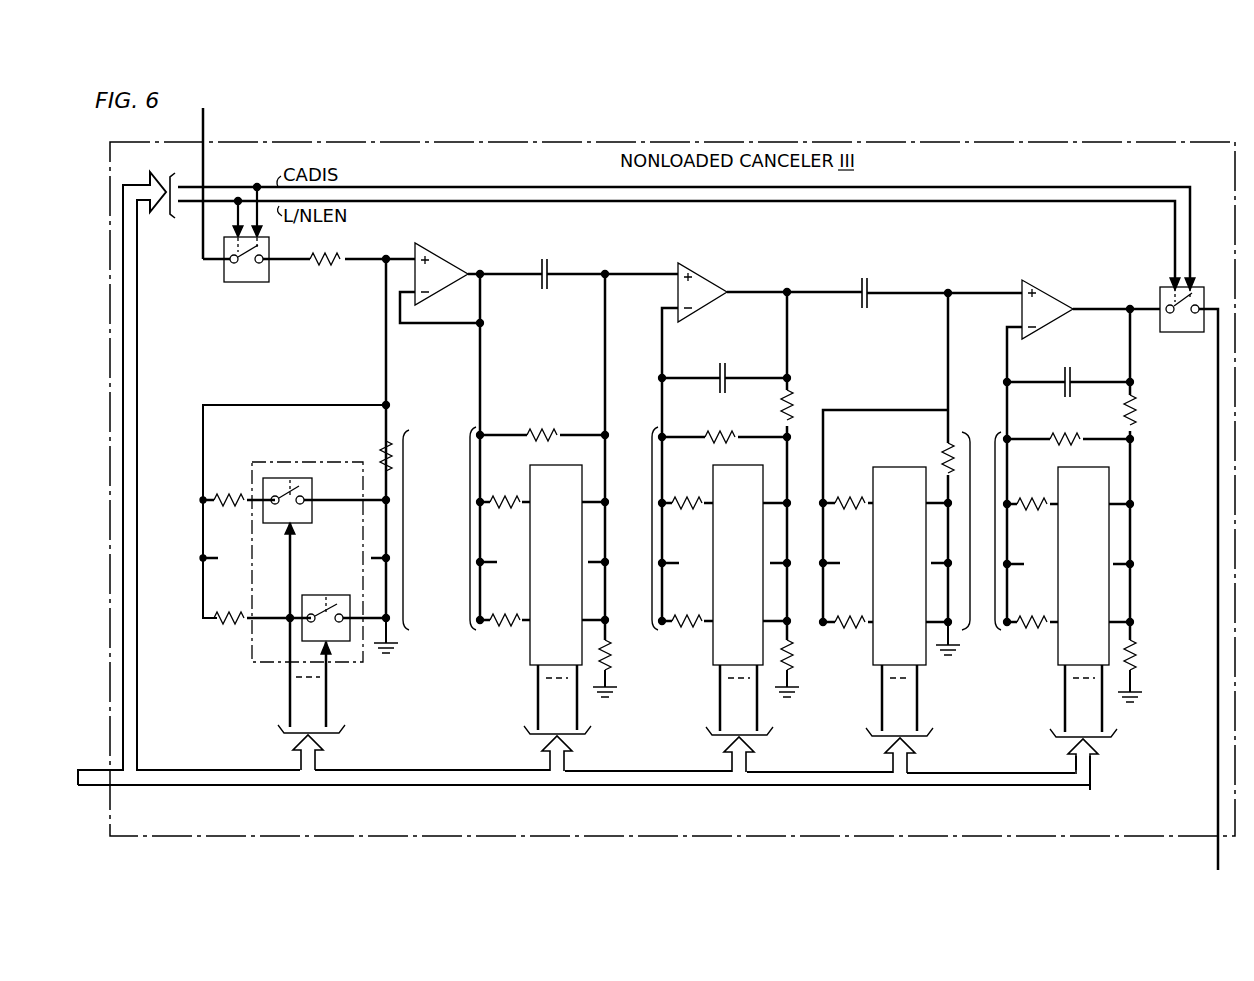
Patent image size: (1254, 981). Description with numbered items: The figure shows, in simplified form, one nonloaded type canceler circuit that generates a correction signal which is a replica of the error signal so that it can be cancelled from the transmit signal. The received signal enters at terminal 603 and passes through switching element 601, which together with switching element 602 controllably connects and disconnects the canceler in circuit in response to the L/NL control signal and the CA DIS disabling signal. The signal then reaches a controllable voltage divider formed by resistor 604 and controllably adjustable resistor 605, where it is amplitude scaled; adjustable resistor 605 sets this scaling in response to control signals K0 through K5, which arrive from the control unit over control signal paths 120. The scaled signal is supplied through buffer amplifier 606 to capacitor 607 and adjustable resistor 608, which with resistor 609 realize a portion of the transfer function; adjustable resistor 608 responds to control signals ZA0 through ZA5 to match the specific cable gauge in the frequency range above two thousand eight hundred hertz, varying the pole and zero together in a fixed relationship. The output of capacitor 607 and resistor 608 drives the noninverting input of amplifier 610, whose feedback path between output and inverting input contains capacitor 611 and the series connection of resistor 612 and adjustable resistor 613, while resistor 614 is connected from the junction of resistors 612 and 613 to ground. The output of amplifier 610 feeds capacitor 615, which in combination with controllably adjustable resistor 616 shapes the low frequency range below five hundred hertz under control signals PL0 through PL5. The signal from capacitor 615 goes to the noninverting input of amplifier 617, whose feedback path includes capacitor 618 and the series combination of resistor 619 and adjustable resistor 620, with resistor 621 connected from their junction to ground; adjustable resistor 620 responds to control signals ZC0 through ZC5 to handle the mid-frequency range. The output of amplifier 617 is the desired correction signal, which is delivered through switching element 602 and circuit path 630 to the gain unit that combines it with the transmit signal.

The control signal paths 120 is at (90, 777).
The terminal 603 is at (205, 124).
The switching element 601 is at (252, 283).
The resistor 604 is at (330, 266).
The buffer amplifier 606 is at (443, 244).
The capacitor 607 is at (550, 262).
The controllably adjustable resistor 605 is at (408, 514).
The adjustable resistor 608 is at (467, 572).
The resistor 609 is at (612, 657).
The amplifier 610 is at (702, 271).
The capacitor 611 is at (728, 368).
The resistor 612 is at (796, 410).
The adjustable resistor 613 is at (653, 500).
The resistor 614 is at (793, 657).
The capacitor 615 is at (869, 285).
The controllably adjustable resistor 616 is at (972, 485).
The amplifier 617 is at (1044, 273).
The capacitor 618 is at (1073, 372).
The resistor 619 is at (1137, 418).
The adjustable resistor 620 is at (993, 535).
The resistor 621 is at (1135, 660).
The switching element 602 is at (1193, 333).
The circuit path 630 is at (1216, 818).